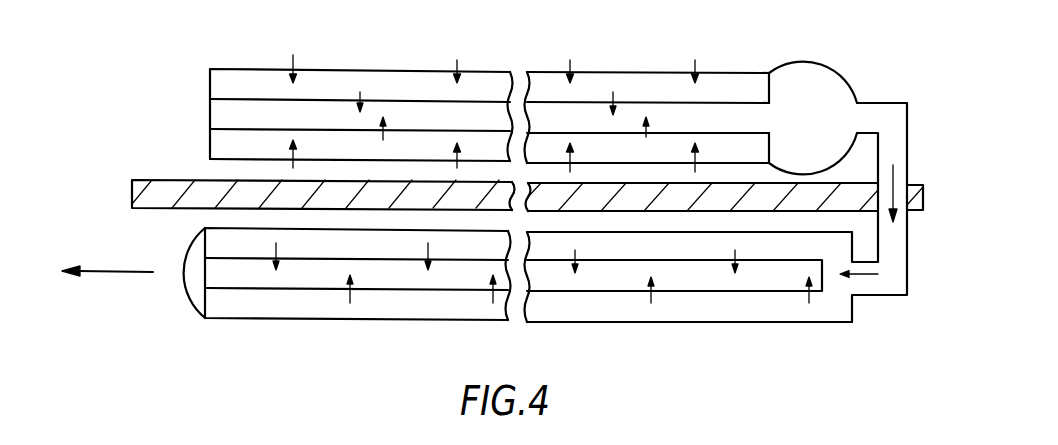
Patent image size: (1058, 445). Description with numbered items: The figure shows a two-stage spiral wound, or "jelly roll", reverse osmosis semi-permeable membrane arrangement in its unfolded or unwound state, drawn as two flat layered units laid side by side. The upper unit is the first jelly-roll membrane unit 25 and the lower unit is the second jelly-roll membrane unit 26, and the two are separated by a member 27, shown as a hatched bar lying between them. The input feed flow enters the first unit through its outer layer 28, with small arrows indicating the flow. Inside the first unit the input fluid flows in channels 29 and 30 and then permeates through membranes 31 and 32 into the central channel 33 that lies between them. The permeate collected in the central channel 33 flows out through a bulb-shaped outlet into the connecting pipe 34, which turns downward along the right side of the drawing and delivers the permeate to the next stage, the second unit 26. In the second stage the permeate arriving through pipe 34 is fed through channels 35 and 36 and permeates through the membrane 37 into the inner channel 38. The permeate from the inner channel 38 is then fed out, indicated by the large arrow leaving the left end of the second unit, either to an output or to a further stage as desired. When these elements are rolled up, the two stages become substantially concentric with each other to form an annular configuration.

The jelly-roll membrane unit 25 is at (305, 88).
The jelly-roll membrane unit 26 is at (286, 319).
The member 27 is at (145, 180).
The outer layer 28 is at (257, 68).
The channel 29 is at (395, 83).
The channel 30 is at (430, 143).
The membrane 31 is at (589, 100).
The membrane 32 is at (665, 132).
The central channel 33 is at (737, 118).
The connecting pipe 34 is at (908, 133).
The channel 35 is at (602, 308).
The channel 36 is at (698, 248).
The membrane 37 is at (280, 288).
The inner channel 38 is at (413, 277).